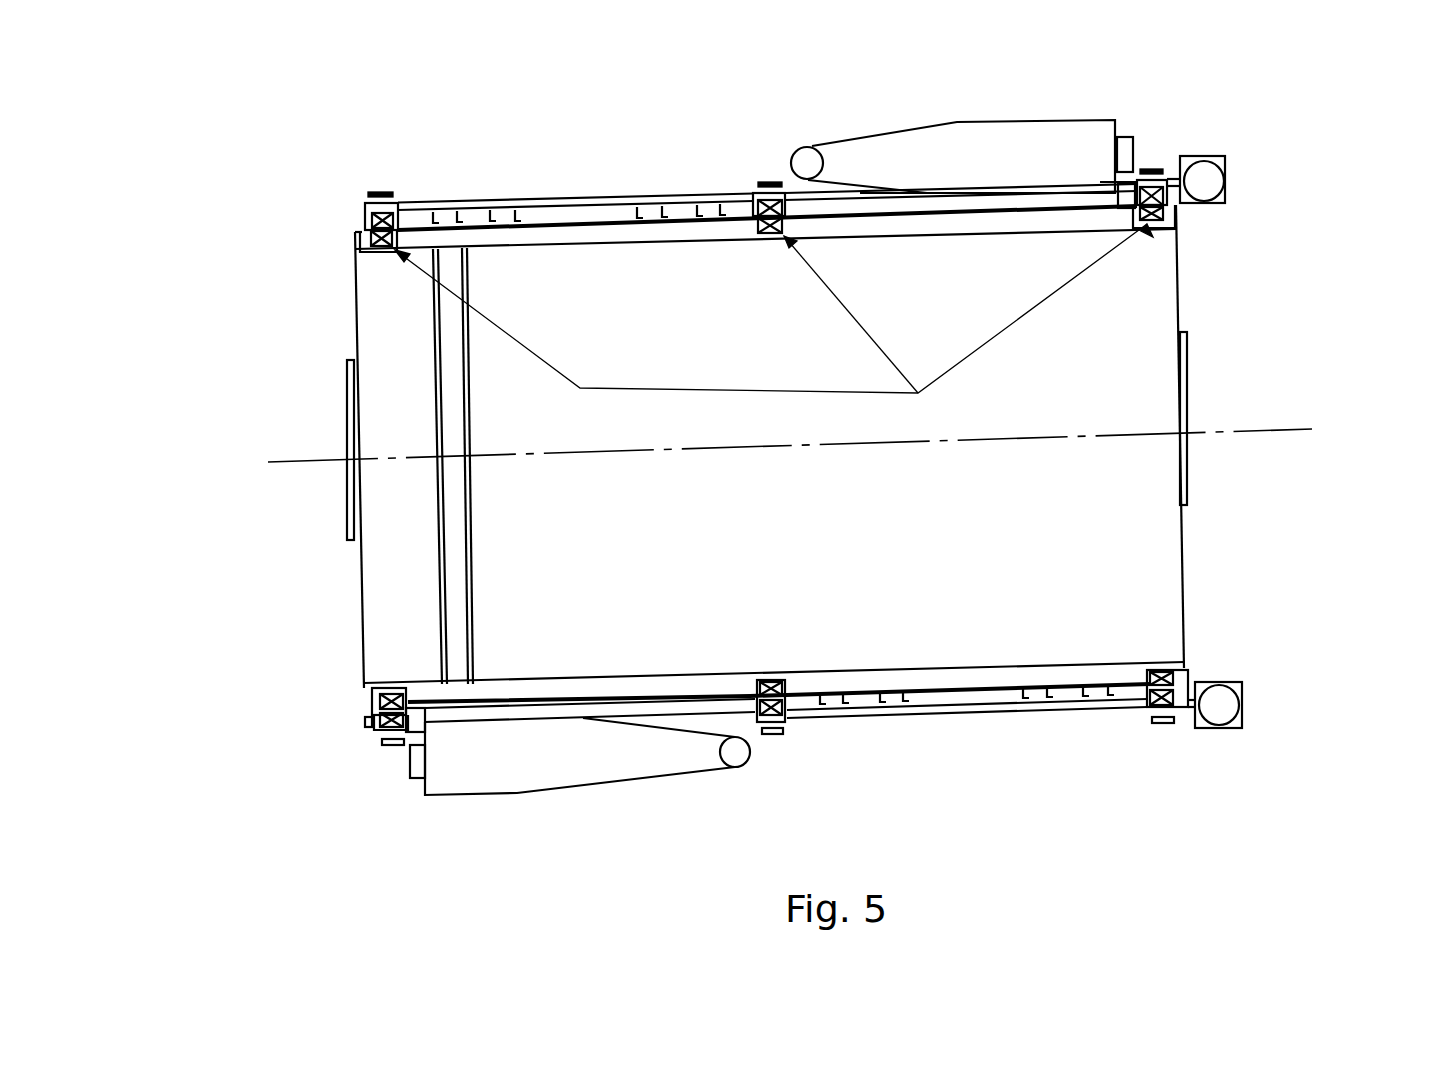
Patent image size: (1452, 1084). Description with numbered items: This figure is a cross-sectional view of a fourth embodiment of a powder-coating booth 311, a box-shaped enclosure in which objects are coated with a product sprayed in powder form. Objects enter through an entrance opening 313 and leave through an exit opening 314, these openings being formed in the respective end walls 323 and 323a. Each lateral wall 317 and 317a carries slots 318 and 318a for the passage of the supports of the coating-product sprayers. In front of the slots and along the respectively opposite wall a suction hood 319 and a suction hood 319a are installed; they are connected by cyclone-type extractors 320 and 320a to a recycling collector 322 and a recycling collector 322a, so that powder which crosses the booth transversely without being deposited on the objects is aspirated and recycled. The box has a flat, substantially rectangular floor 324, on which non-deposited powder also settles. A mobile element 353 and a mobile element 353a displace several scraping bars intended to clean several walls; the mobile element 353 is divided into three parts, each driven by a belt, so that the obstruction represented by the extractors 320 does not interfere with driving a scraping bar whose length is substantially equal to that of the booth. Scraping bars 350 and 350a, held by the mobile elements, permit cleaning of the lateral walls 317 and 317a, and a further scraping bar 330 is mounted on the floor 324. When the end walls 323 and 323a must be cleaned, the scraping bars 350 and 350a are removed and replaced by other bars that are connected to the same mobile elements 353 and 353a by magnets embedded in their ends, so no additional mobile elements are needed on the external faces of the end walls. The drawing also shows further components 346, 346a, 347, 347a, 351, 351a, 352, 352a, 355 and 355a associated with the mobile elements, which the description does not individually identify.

The booth 311 is at (893, 158).
The entrance opening 313 is at (1200, 418).
The exit opening 314 is at (348, 422).
The lateral wall 317 is at (531, 224).
The lateral wall 317a is at (986, 708).
The slots 318 is at (446, 214).
The slots 318a is at (830, 703).
The suction hood 319 is at (975, 192).
The suction hood 319a is at (564, 714).
The extractors 320 is at (1038, 140).
The extractors 320a is at (512, 771).
The recycling collector 322 is at (808, 155).
The recycling collector 322a is at (733, 762).
The end wall 323 is at (1194, 575).
The end wall 323a is at (355, 632).
The floor 324 is at (790, 459).
The scraping bar 330 is at (478, 553).
The upper rack bar 346 is at (596, 200).
The lower rack bar 346a is at (1086, 717).
The upper end roller 347 is at (1228, 190).
The lower end roller 347a is at (1240, 707).
The scraping bar 350 is at (646, 232).
The scraping bar 350a is at (657, 678).
The upper bearing housing 351 is at (774, 330).
The lower bearing housing 351a is at (394, 690).
The upper bearing 352 is at (366, 216).
The lower bearing 352a is at (371, 720).
The mobile element 353 is at (364, 205).
The mobile element 353a is at (372, 734).
The upper retaining plate 355 is at (379, 190).
The lower retaining plate 355a is at (393, 747).